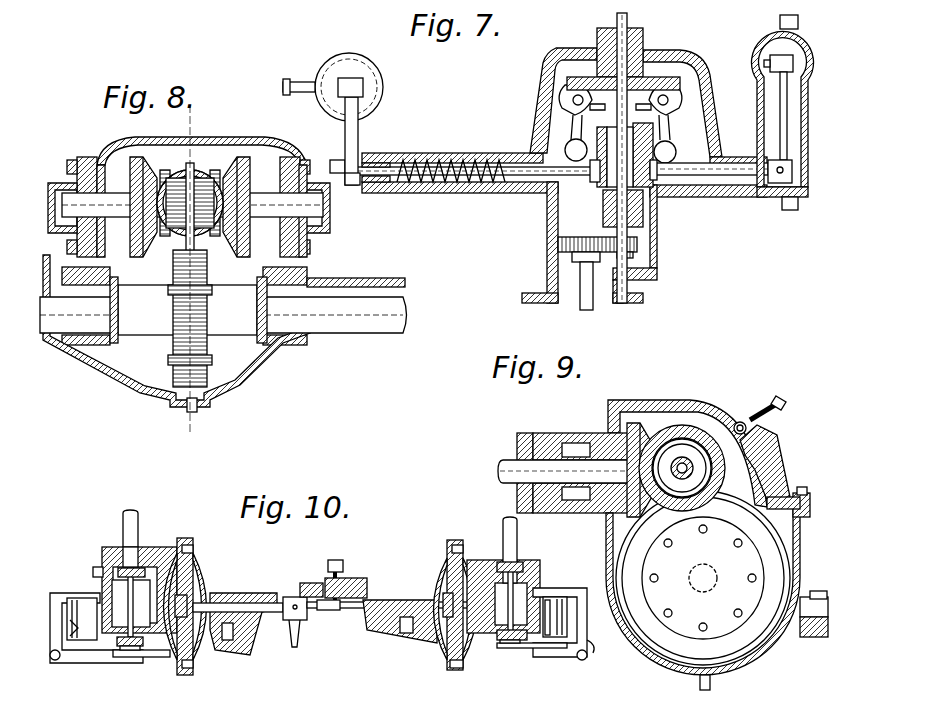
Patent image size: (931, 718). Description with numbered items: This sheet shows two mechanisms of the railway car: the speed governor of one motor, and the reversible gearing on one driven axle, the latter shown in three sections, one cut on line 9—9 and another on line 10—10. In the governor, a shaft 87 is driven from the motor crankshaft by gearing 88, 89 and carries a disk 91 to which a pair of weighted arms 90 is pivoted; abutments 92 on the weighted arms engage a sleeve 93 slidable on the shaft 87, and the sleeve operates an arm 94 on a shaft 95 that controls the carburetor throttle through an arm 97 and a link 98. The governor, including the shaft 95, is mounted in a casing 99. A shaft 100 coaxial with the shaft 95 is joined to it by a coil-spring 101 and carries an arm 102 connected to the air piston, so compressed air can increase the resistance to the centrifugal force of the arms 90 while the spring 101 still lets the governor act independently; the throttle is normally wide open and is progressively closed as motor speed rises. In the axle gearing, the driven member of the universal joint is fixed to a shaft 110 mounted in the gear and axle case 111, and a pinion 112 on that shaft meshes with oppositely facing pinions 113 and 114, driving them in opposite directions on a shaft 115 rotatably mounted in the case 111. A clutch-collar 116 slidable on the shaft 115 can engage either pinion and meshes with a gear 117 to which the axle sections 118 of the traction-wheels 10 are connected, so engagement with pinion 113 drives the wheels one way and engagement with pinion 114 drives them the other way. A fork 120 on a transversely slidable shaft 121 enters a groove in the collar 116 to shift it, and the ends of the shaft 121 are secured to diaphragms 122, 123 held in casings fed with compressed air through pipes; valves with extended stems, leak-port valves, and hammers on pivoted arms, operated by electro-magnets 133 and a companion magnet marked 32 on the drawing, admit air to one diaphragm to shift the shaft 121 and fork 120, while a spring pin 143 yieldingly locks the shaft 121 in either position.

In FIG. 8, the section line 9 is at (191, 116).
In FIG. 9, the traction-wheels 10 is at (785, 358).
In FIG. 10, the pawl lever 32 is at (75, 623).
In FIG. 7, the shaft 87 is at (578, 127).
In FIG. 7, the gearing 88 is at (560, 238).
In FIG. 7, the gearing 89 is at (640, 242).
In FIG. 7, the weighted arms 90 is at (757, 140).
In FIG. 7, the disk 91 is at (672, 77).
In FIG. 7, the abutments 92 is at (585, 120).
In FIG. 7, the sleeve 93 is at (667, 132).
In FIG. 7, the arm 94 is at (593, 180).
In FIG. 7, the shaft 95 is at (543, 173).
In FIG. 7, the arm 97 is at (787, 113).
In FIG. 7, the link 98 is at (763, 57).
In FIG. 7, the casing 99 is at (390, 155).
In FIG. 7, the shaft 100 is at (390, 187).
In FIG. 7, the coil-spring 101 is at (467, 187).
In FIG. 7, the arm 102 is at (352, 138).
In FIG. 9, the shaft 110 is at (505, 468).
In FIG. 8, the gear and axle case 111 is at (275, 348).
In FIG. 9, the gear and axle case 111 is at (570, 433).
In FIG. 10, the gear and axle case 111 is at (250, 643).
In FIG. 9, the pinion 112 is at (605, 427).
In FIG. 8, the pinion 113 is at (183, 160).
In FIG. 8, the pinion 114 is at (198, 167).
In FIG. 9, the pinion 114 is at (703, 430).
In FIG. 8, the shaft 115 is at (270, 187).
In FIG. 9, the shaft 115 is at (682, 463).
In FIG. 8, the clutch-collar 116 is at (190, 145).
In FIG. 9, the clutch-collar 116 is at (663, 450).
In FIG. 8, the gear 117 is at (207, 343).
In FIG. 9, the gear 117 is at (665, 647).
In FIG. 8, the axle sections 118 is at (332, 313).
In FIG. 9, the axle sections 118 is at (697, 572).
In FIG. 9, the fork 120 is at (753, 460).
In FIG. 10, the fork 120 is at (300, 630).
In FIG. 9, the transversely slidable shaft 121 is at (763, 433).
In FIG. 10, the transversely slidable shaft 121 is at (395, 602).
In FIG. 10, the diaphragm 122 is at (187, 592).
In FIG. 10, the diaphragm 123 is at (443, 583).
In FIG. 10, the electro-magnets 133 is at (560, 643).
In FIG. 9, the spring pin 143 is at (767, 398).
In FIG. 10, the spring pin 143 is at (343, 578).